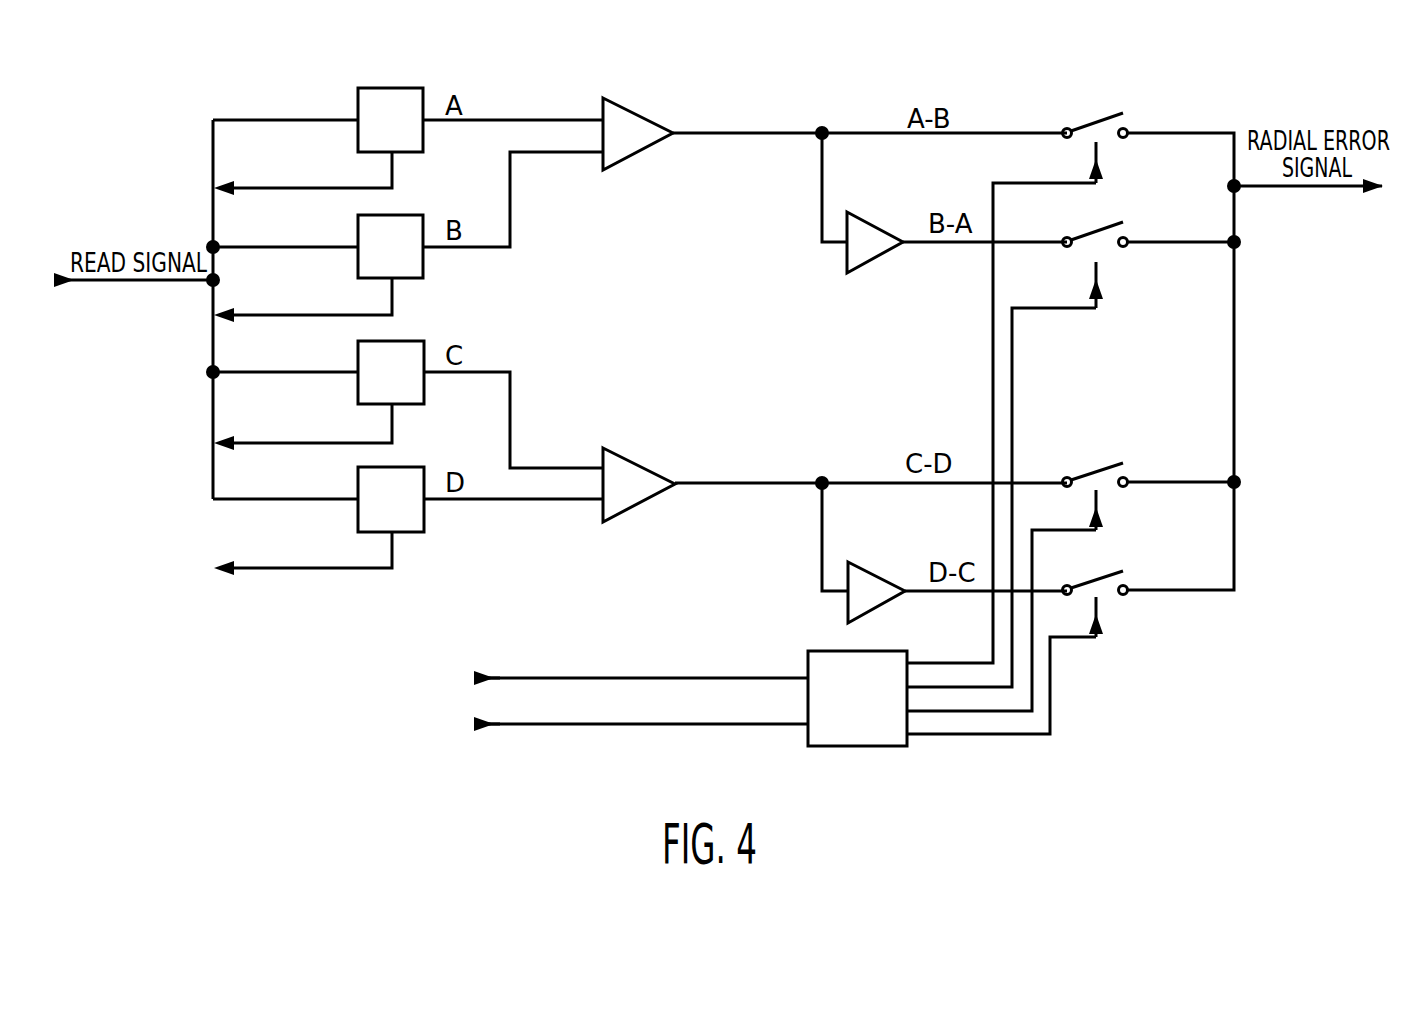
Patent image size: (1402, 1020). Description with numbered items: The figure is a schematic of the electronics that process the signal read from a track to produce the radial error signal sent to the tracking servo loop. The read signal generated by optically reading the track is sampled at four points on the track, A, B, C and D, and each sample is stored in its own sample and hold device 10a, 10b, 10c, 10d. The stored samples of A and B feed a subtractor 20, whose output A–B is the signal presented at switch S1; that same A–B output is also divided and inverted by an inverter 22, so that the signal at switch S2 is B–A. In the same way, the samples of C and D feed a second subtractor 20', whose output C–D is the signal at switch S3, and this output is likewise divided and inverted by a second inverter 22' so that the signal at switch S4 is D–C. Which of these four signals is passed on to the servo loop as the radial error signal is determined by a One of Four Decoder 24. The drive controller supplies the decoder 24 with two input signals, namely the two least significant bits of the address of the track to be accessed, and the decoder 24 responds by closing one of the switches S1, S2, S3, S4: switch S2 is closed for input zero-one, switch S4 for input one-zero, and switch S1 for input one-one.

The sample and hold device 10a is at (365, 97).
The sample and hold device 10b is at (413, 270).
The sample and hold device 10c is at (418, 388).
The sample and hold device 10d is at (413, 517).
The subtractor 20 is at (685, 177).
The subtractor 20' is at (686, 476).
The inverter 22 is at (889, 246).
The inverter 22' is at (847, 576).
The One of Four Decoder 24 is at (863, 737).
The switch S1 is at (1095, 135).
The switch S2 is at (1095, 253).
The switch S3 is at (1095, 485).
The switch S4 is at (1095, 592).